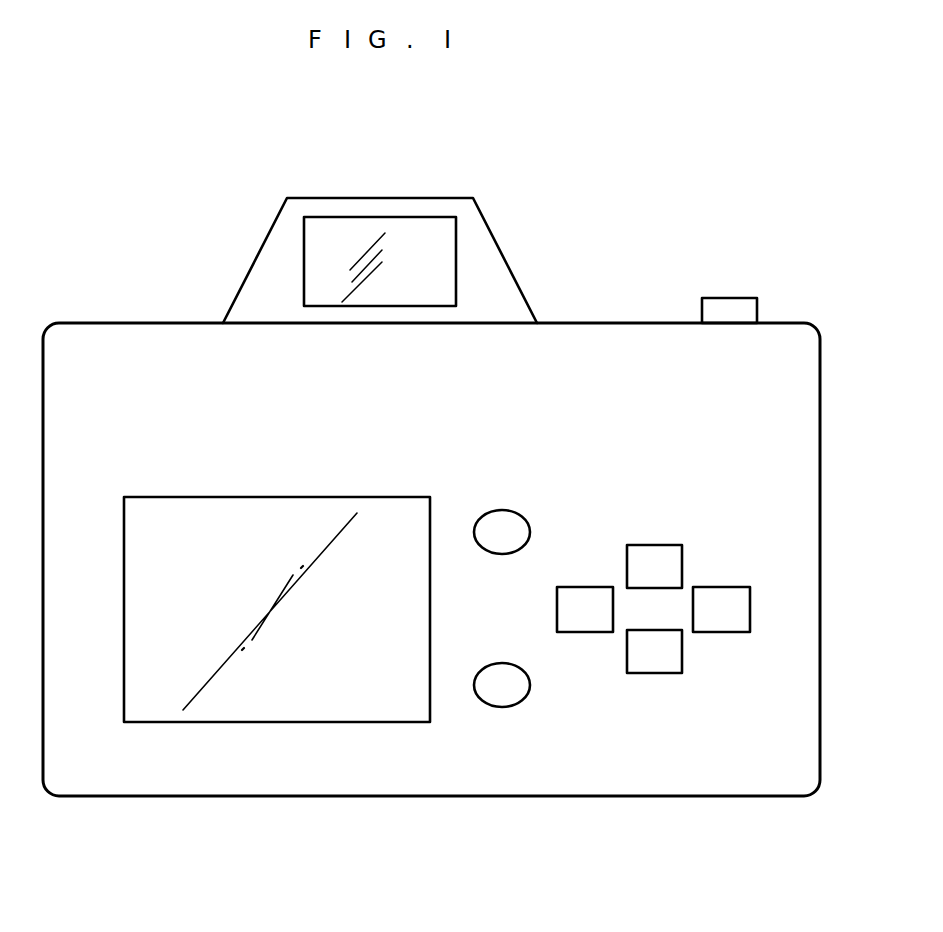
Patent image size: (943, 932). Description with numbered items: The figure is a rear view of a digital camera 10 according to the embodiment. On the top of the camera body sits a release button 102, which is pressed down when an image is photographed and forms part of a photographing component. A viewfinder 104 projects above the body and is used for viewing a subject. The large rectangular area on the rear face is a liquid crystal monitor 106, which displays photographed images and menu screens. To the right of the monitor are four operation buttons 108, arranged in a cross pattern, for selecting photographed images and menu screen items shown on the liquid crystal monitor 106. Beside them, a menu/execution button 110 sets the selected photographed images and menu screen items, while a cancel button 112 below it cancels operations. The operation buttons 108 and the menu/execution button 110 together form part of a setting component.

The digital camera 10 is at (720, 193).
The release button 102 is at (735, 298).
The viewfinder 104 is at (456, 252).
The liquid crystal monitor 106 is at (273, 722).
The operation buttons 108 is at (590, 587).
The menu/execution button 110 is at (516, 511).
The cancel button 112 is at (516, 706).